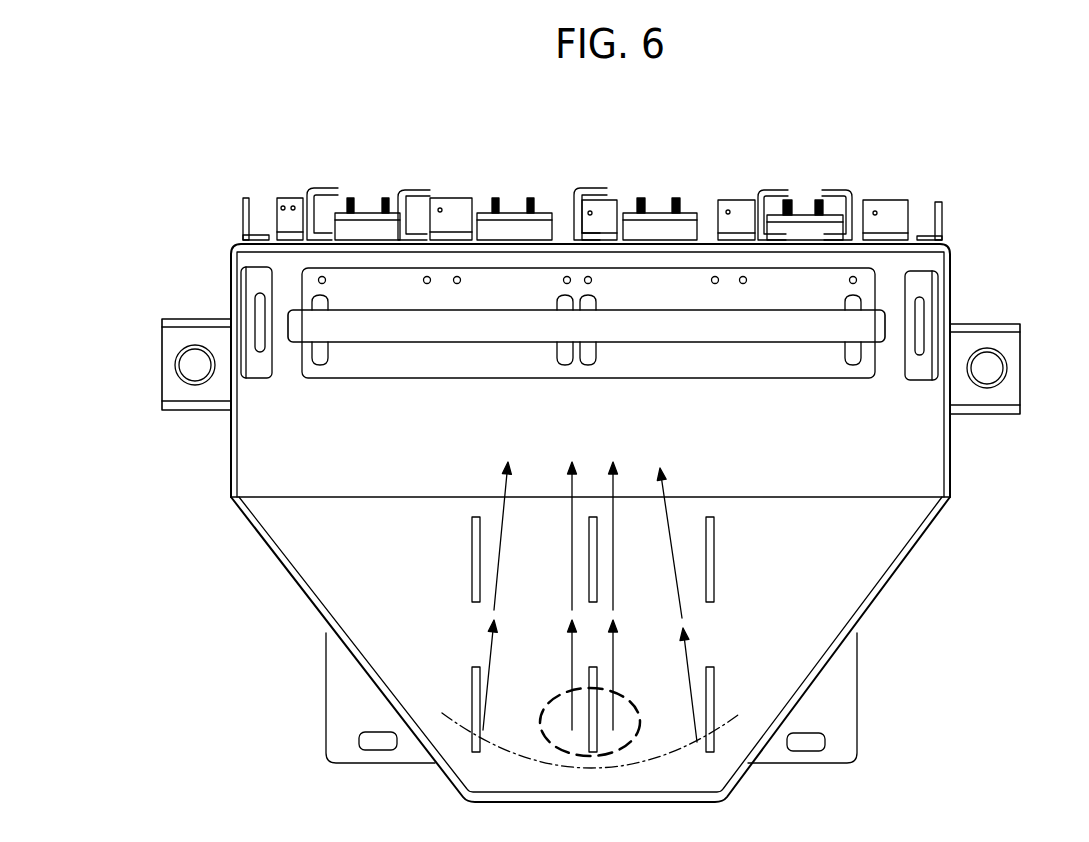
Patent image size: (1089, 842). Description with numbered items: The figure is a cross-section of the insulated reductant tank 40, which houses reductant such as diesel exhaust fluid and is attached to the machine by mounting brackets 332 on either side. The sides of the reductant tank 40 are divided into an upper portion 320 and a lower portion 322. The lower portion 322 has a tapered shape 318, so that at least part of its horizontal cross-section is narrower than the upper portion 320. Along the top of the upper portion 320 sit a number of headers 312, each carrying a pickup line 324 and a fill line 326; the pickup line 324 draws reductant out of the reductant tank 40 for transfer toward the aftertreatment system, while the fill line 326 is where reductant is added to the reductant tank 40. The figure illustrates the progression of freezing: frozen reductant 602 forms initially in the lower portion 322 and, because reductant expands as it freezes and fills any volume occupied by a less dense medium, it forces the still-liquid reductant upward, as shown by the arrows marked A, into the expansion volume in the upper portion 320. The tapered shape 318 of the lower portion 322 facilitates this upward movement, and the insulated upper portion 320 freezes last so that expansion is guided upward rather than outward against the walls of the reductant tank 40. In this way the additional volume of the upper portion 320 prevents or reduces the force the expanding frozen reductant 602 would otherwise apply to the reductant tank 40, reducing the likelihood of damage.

The insulated reductant tank 40 is at (378, 124).
The header 312 is at (407, 187).
The tapered shape 318 is at (960, 522).
The upper portion 320 is at (122, 250).
The lower portion 322 is at (218, 505).
The pickup line 324 is at (367, 187).
The fill line 326 is at (397, 188).
The mounting bracket 332 is at (162, 358).
The frozen reductant 602 is at (568, 752).